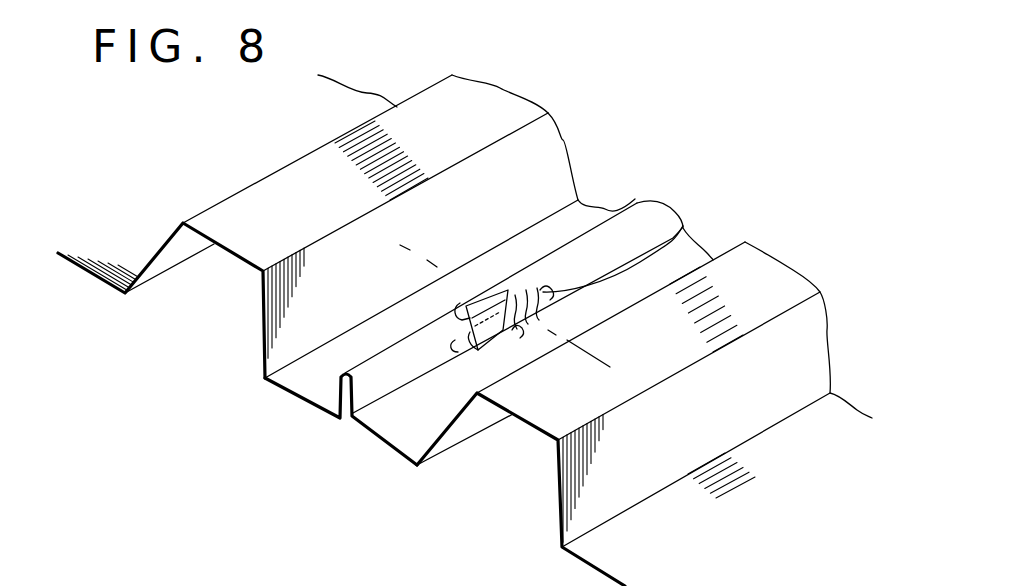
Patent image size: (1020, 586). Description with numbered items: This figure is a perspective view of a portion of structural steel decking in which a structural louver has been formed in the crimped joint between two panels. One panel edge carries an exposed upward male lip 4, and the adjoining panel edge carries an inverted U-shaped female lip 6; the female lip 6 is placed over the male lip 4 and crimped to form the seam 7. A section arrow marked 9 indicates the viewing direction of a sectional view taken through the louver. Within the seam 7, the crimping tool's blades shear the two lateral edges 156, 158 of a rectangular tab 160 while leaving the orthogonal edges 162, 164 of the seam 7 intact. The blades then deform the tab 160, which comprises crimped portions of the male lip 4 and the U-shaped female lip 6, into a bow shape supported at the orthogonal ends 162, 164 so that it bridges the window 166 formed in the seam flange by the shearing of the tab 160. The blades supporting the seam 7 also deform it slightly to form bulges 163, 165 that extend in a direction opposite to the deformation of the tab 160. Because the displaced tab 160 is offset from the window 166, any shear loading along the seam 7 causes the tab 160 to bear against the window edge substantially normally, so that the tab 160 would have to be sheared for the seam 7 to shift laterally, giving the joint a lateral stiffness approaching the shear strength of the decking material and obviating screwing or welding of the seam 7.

The male lip 4 is at (377, 448).
The female lip 6 is at (280, 390).
The seam 7 is at (635, 197).
The section line for FIG. 9 is at (445, 227).
The lateral edge 156 is at (680, 237).
The lateral edge 158 is at (467, 318).
The tab 160 is at (473, 300).
The orthogonal edge 162 is at (492, 307).
The bulge 163 is at (543, 287).
The orthogonal edge 164 is at (475, 327).
The bulge 165 is at (455, 340).
The window 166 is at (519, 335).